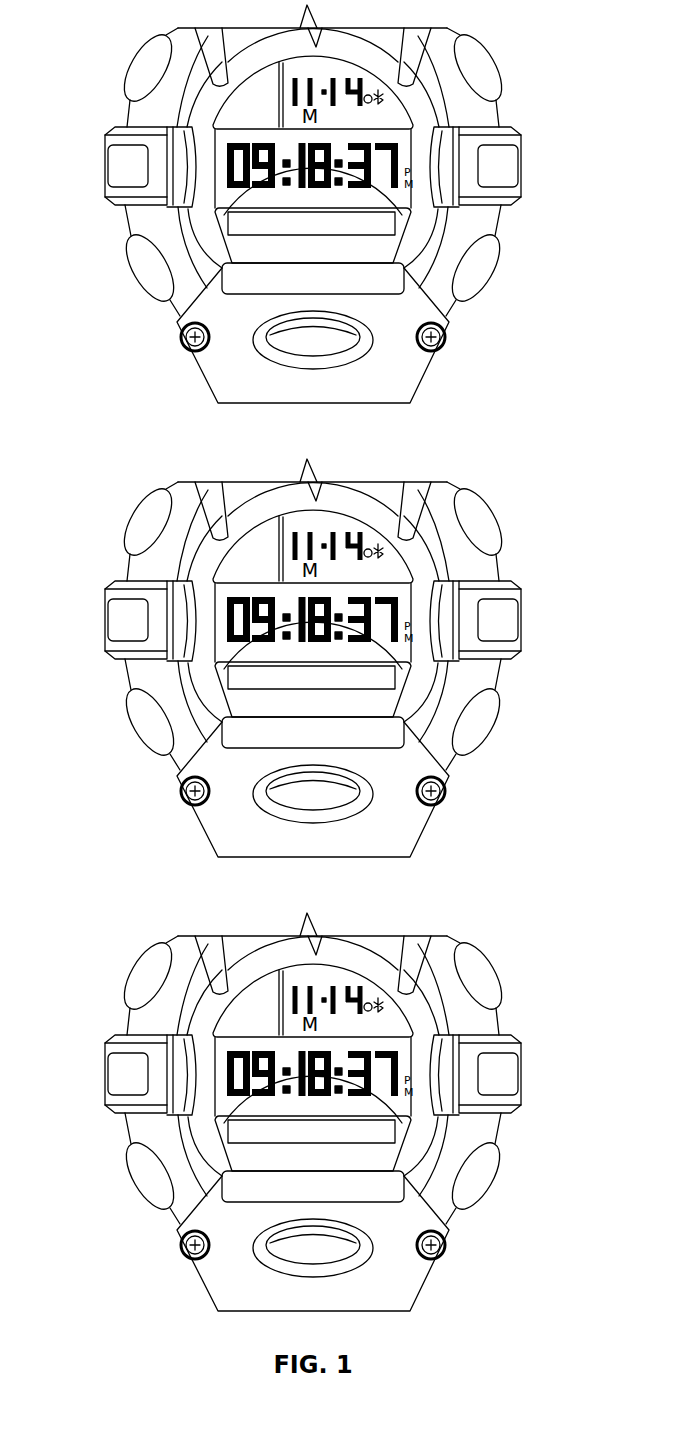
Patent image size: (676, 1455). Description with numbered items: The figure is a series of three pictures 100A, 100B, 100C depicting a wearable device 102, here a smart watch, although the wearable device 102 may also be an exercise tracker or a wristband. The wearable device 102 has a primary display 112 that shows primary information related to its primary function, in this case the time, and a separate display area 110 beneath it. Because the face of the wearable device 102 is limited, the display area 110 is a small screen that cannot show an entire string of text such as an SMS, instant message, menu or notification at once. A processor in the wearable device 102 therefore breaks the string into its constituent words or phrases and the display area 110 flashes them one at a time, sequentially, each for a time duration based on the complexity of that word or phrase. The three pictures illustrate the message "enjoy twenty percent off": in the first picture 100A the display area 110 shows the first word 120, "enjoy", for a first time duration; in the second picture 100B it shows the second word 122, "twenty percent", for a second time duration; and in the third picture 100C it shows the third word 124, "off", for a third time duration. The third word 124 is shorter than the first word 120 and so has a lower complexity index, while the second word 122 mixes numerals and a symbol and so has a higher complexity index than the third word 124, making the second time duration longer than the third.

The first picture 100A is at (464, 28).
The second picture 100B is at (331, 658).
The third picture 100C is at (331, 1112).
The wearable device 102 is at (118, 109).
The display area 110 is at (225, 219).
The primary display 112 is at (215, 153).
The first word 120 is at (340, 223).
The second word 122 is at (426, 713).
The third word 124 is at (429, 1167).